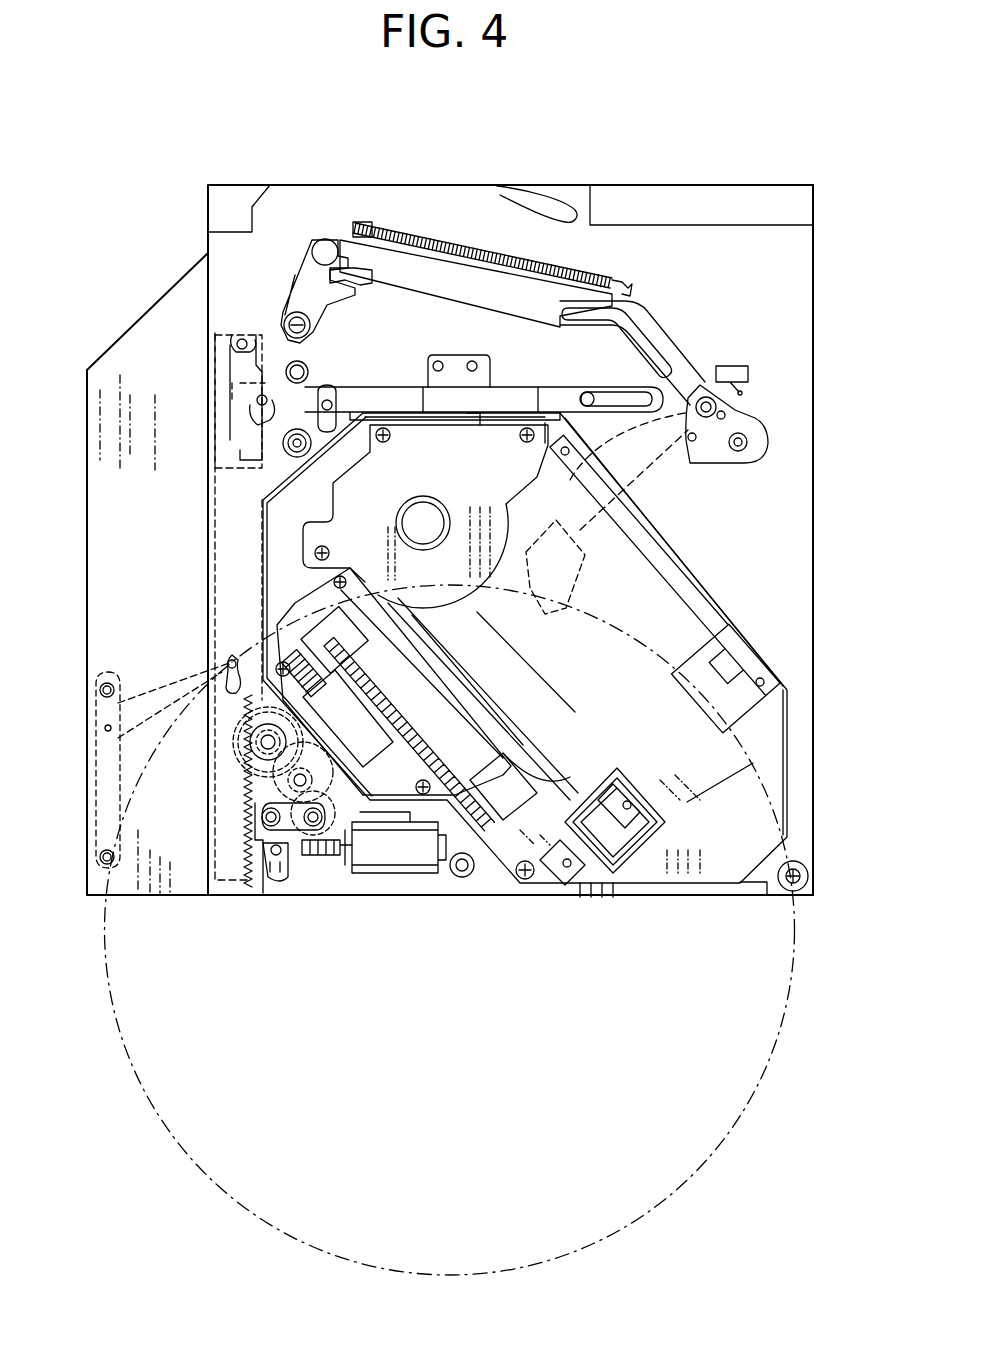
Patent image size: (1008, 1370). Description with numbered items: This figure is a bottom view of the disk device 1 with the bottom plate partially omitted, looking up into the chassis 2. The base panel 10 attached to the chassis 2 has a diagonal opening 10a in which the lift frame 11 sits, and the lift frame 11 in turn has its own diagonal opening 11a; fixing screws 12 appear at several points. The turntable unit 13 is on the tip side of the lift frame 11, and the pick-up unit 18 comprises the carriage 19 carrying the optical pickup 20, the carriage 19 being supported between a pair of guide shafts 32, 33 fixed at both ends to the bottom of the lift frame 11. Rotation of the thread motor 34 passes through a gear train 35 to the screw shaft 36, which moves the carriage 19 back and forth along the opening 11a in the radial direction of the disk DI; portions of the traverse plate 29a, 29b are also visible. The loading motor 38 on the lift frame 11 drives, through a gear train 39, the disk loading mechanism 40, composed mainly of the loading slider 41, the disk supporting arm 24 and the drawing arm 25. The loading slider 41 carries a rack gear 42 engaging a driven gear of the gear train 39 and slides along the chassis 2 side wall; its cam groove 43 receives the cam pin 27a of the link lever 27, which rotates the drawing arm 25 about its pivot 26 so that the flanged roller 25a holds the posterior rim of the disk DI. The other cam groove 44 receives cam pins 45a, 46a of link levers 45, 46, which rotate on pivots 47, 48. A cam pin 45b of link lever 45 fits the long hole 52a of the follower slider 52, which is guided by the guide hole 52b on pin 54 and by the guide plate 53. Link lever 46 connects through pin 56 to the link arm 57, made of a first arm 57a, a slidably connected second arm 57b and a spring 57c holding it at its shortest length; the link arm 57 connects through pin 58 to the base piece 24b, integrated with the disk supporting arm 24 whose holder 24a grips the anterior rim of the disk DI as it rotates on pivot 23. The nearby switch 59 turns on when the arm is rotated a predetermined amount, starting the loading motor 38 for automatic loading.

The optical disc drive 1 is at (602, 175).
The chassis 2 is at (813, 558).
The base panel 10 is at (760, 270).
The opening 10a is at (702, 592).
The lift frame 11 is at (770, 725).
The opening 11a is at (622, 708).
The fixing screw 12 is at (312, 455).
The turntable unit 13 is at (455, 592).
The pick-up unit 18 is at (712, 779).
The carriage 19 is at (690, 800).
The optical pickup 20 is at (648, 805).
The pivot 23 is at (748, 443).
The disk supporting arm 24 is at (633, 460).
The holder 24a is at (560, 577).
The base piece 24b is at (738, 420).
The drawing arm 25 is at (100, 793).
The flanged roller 25a is at (100, 858).
The pivot 26 is at (100, 690).
The link lever 27 is at (135, 690).
The cam pin 27a is at (228, 664).
The traverse plate 29a is at (474, 425).
The traverse screw 29b is at (298, 556).
The guide shaft 32 is at (433, 707).
The guide shaft 33 is at (678, 603).
The thread motor 34 is at (333, 697).
The gear train 35 is at (308, 636).
The screw shaft 36 is at (437, 753).
The loading motor 38 is at (376, 856).
The gear train 39 is at (288, 782).
The disk loading mechanism 40 is at (252, 485).
The loading slider 41 is at (232, 526).
The rack gear 42 is at (250, 888).
The cam groove 43 is at (245, 765).
The cam groove 44 is at (240, 383).
The link lever 45 is at (325, 398).
The cam pin 45a is at (258, 402).
The cam pin 45b is at (330, 404).
The link lever 46 is at (318, 286).
The cam pin 46a is at (240, 340).
The pivot 47 is at (288, 372).
The pivot 48 is at (288, 322).
The follower slider 52 is at (528, 400).
The long hole 52a is at (360, 455).
The guide hole 52b is at (605, 400).
The guide plate 53 is at (430, 380).
The pin 54 is at (585, 396).
The pin 56 is at (328, 250).
The link arm 57 is at (455, 266).
The first arm 57a is at (405, 268).
The second arm 57b is at (652, 326).
The spring 57c is at (538, 264).
The pin 58 is at (702, 395).
The switch 59 is at (733, 366).
The disk DI is at (682, 1178).